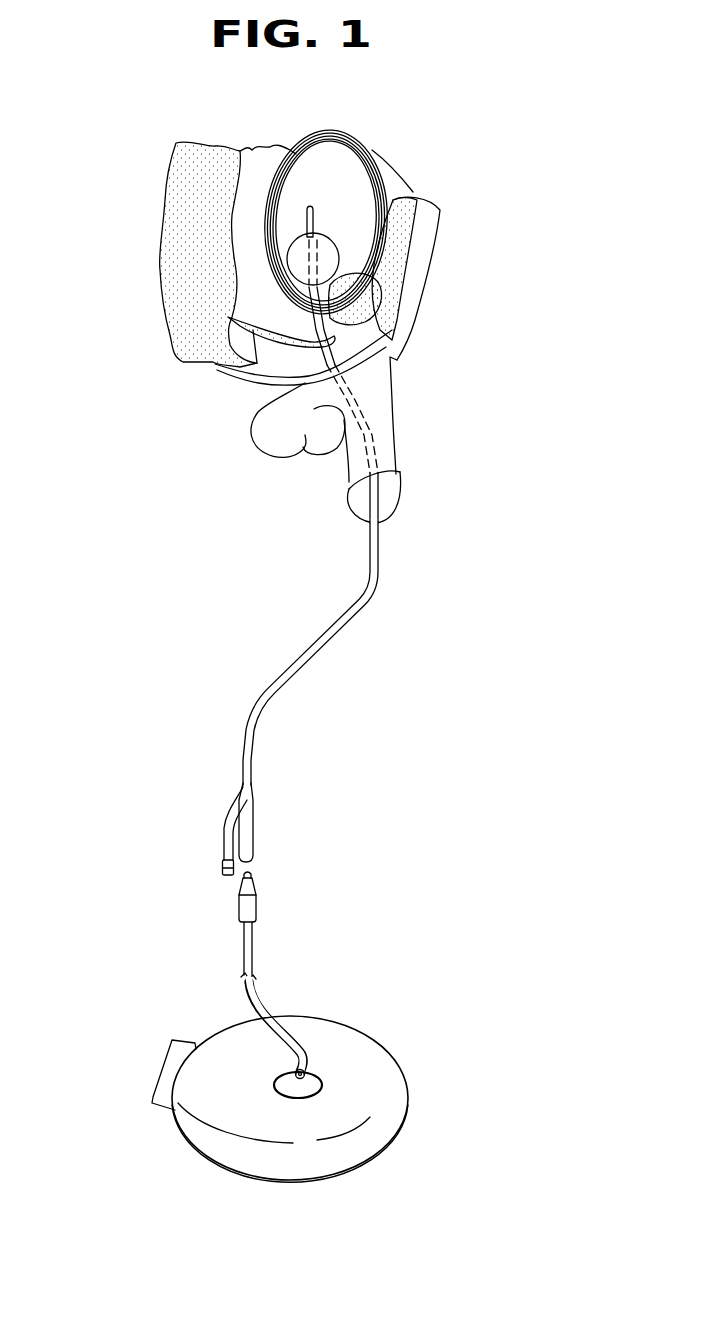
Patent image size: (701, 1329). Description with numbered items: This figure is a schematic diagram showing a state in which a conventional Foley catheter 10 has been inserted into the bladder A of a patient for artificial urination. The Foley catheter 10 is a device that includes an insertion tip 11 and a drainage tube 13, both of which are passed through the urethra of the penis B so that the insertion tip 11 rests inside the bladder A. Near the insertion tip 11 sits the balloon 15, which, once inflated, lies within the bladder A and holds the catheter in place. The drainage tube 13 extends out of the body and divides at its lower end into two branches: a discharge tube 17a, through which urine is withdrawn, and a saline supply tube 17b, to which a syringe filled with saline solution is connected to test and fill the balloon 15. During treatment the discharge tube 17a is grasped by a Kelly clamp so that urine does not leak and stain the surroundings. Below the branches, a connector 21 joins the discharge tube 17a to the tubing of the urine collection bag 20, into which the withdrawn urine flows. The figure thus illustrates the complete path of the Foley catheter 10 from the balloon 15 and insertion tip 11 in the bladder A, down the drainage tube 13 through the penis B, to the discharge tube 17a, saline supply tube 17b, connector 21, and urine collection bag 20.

The Foley catheter 10 is at (151, 485).
The insertion tip 11 is at (316, 212).
The drainage tube 13 is at (374, 553).
The balloon 15 is at (330, 260).
The discharge tube 17a is at (250, 848).
The saline supply tube 17b is at (226, 851).
The urine collection bag 20 is at (356, 1048).
The connector 21 is at (250, 912).
The bladder A is at (298, 194).
The penis B is at (385, 415).